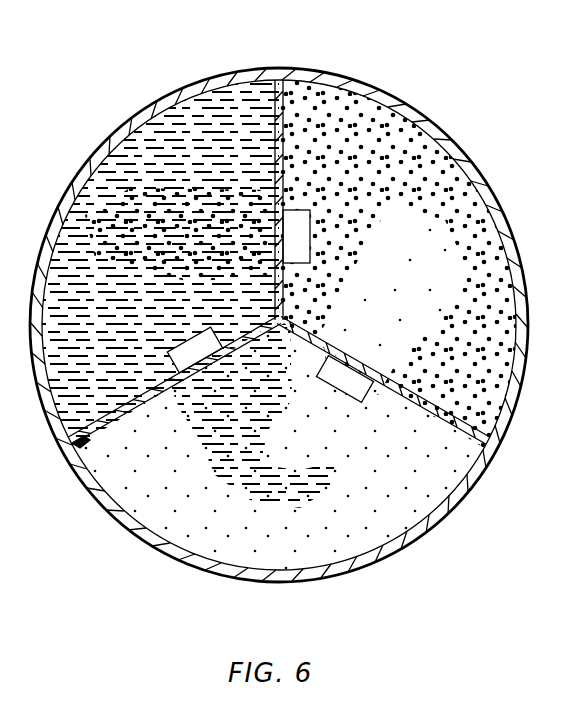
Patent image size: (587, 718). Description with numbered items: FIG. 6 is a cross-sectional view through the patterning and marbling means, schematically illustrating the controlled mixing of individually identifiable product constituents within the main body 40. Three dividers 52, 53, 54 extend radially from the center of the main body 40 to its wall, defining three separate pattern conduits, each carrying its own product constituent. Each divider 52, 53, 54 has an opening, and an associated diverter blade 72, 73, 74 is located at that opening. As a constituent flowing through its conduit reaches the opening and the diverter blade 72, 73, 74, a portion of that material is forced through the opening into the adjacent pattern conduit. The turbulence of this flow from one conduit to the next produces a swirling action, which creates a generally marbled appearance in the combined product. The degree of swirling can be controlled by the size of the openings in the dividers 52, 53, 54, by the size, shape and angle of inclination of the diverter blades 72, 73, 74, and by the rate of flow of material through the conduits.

The main body 40 is at (63, 208).
The divider 52 is at (283, 81).
The divider 53 is at (488, 444).
The divider 54 is at (76, 450).
The diverter blade 72 is at (405, 265).
The diverter blade 73 is at (280, 450).
The diverter blade 74 is at (160, 265).